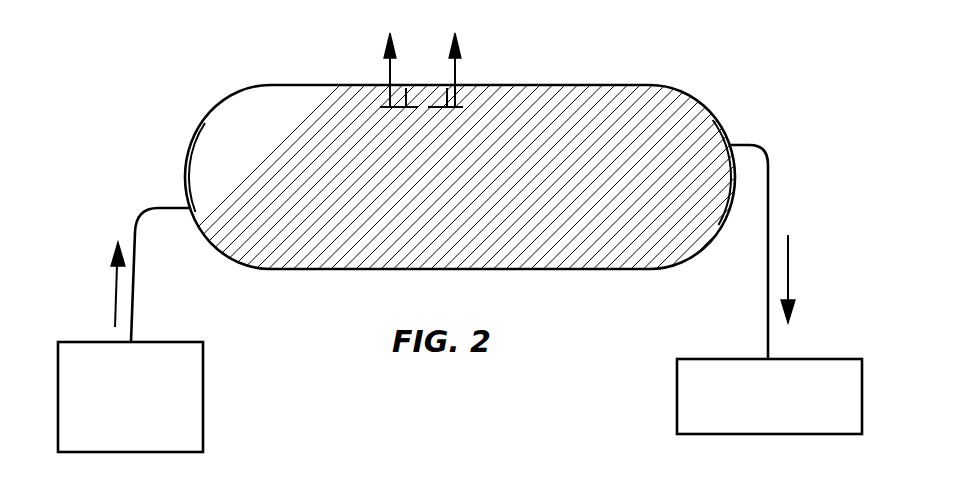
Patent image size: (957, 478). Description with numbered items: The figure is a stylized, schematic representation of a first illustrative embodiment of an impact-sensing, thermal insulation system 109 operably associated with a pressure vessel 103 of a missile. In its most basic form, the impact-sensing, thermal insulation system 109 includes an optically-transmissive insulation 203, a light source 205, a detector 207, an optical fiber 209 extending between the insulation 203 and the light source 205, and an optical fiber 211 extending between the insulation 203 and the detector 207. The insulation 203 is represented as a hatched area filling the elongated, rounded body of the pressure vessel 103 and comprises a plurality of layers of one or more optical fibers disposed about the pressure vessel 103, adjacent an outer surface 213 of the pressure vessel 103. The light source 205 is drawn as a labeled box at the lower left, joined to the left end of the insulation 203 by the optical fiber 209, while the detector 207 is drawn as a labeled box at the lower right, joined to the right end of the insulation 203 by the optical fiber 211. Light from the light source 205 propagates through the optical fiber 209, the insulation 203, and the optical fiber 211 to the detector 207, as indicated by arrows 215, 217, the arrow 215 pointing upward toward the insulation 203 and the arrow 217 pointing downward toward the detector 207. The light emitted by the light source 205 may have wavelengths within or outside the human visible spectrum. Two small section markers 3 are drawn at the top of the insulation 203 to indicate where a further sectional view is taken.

The section line for FIG. 3 is at (421, 57).
The pressure vessel 103 is at (687, 97).
The impact-sensing, thermal insulation system 109 is at (805, 190).
The optically-transmissive insulation 203 is at (590, 103).
The light source 205 is at (203, 363).
The detector 207 is at (677, 391).
The optical fiber 209 is at (148, 210).
The optical fiber 211 is at (768, 215).
The outer surface 213 is at (192, 168).
The arrow 215 is at (115, 303).
The arrow 217 is at (790, 256).